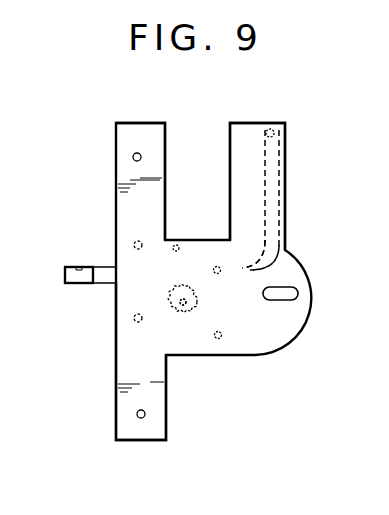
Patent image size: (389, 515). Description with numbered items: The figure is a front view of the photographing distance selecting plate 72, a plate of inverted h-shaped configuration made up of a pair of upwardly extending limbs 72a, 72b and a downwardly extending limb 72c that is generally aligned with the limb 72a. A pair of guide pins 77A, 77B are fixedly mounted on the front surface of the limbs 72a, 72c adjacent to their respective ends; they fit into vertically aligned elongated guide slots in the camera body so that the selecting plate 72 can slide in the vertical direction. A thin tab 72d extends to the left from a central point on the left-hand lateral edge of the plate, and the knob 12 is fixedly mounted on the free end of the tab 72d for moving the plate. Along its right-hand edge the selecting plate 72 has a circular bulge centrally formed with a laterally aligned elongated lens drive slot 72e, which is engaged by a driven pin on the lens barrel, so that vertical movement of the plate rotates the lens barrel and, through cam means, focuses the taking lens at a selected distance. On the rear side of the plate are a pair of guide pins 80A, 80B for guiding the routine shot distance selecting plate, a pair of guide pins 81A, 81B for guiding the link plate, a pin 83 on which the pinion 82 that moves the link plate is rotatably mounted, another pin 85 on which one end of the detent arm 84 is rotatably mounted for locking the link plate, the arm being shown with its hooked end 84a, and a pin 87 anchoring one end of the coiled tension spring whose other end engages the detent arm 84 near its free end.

The knob 12 is at (65, 272).
The distance selecting plate 72 is at (300, 144).
The upwardly extending limb 72a is at (143, 131).
The upwardly extending limb 72b is at (246, 130).
The downwardly extending limb 72c is at (143, 440).
The thin tab 72d is at (104, 283).
The lens drive slot 72e is at (298, 293).
The guide pin 77A is at (133, 157).
The guide pin 77B is at (137, 414).
The guide pin 80A is at (134, 244).
The guide pin 80B is at (134, 320).
The guide pin 81A is at (218, 274).
The guide pin 81B is at (218, 339).
The pinion 82 is at (183, 316).
The pin 83 is at (175, 295).
The detent arm 84 is at (273, 185).
The hooked end of guide slot 84a is at (241, 267).
The pin 85 is at (273, 130).
The pin 87 is at (177, 245).